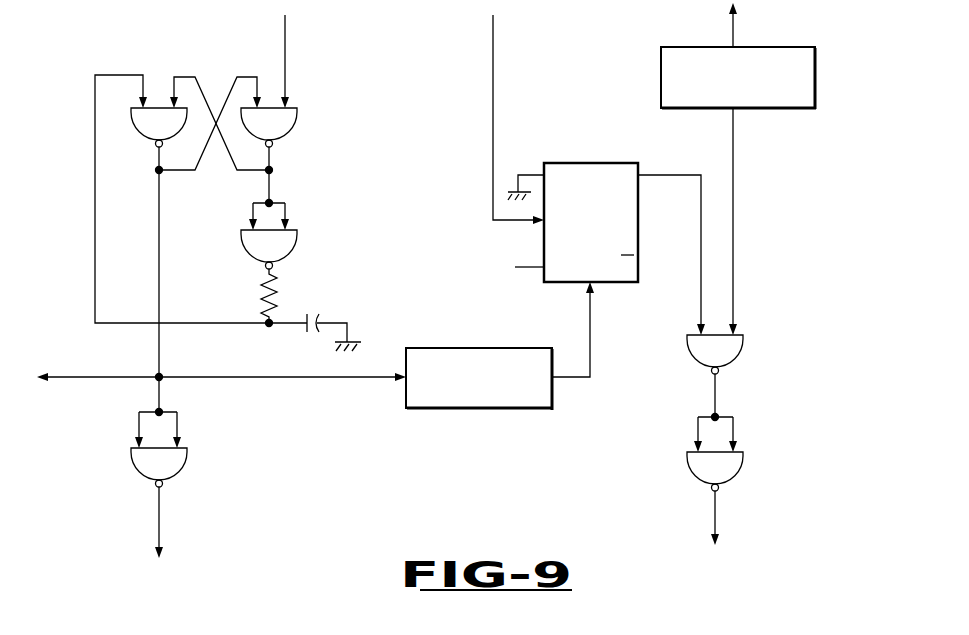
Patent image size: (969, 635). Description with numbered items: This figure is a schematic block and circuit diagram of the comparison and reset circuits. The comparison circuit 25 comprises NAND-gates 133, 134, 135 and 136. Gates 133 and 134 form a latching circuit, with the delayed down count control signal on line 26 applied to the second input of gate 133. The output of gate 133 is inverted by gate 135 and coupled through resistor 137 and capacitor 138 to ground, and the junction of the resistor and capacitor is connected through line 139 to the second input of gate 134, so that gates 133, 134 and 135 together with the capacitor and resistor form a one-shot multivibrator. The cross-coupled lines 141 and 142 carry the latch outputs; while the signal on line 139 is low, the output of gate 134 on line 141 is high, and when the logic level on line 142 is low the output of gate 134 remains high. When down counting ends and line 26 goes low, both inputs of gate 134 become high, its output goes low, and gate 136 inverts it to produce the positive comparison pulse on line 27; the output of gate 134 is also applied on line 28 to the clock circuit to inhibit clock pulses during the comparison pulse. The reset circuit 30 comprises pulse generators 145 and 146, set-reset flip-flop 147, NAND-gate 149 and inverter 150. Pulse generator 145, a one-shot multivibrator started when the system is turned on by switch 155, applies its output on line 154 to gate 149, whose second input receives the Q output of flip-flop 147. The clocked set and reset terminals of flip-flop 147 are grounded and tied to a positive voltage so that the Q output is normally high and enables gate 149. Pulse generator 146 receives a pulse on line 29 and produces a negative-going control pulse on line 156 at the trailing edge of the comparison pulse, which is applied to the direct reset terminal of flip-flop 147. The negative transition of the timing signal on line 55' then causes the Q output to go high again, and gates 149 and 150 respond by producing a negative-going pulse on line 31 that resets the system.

The comparison circuit 25 is at (78, 62).
The line 26 is at (284, 25).
The line 27 is at (155, 523).
The line 28 is at (100, 374).
The line 29 is at (312, 380).
The reset circuit 30 is at (798, 157).
The line 31 is at (716, 508).
The line 55' is at (487, 119).
The NAND-gate 133 is at (296, 128).
The NAND-gate 134 is at (143, 138).
The NAND-gate 135 is at (296, 240).
The NAND-gate 136 is at (186, 465).
The resistor 137 is at (276, 288).
The capacitor 138 is at (306, 338).
The line 139 is at (225, 323).
The line 141 is at (257, 75).
The line 142 is at (188, 75).
The pulse generator 145 is at (690, 47).
The pulse generator 146 is at (488, 408).
The set-reset flip-flop 147 is at (578, 163).
The NAND-gate 149 is at (741, 352).
The inverter 150 is at (741, 470).
The line 154 is at (734, 247).
The switch 155 is at (734, 22).
The line 156 is at (592, 350).